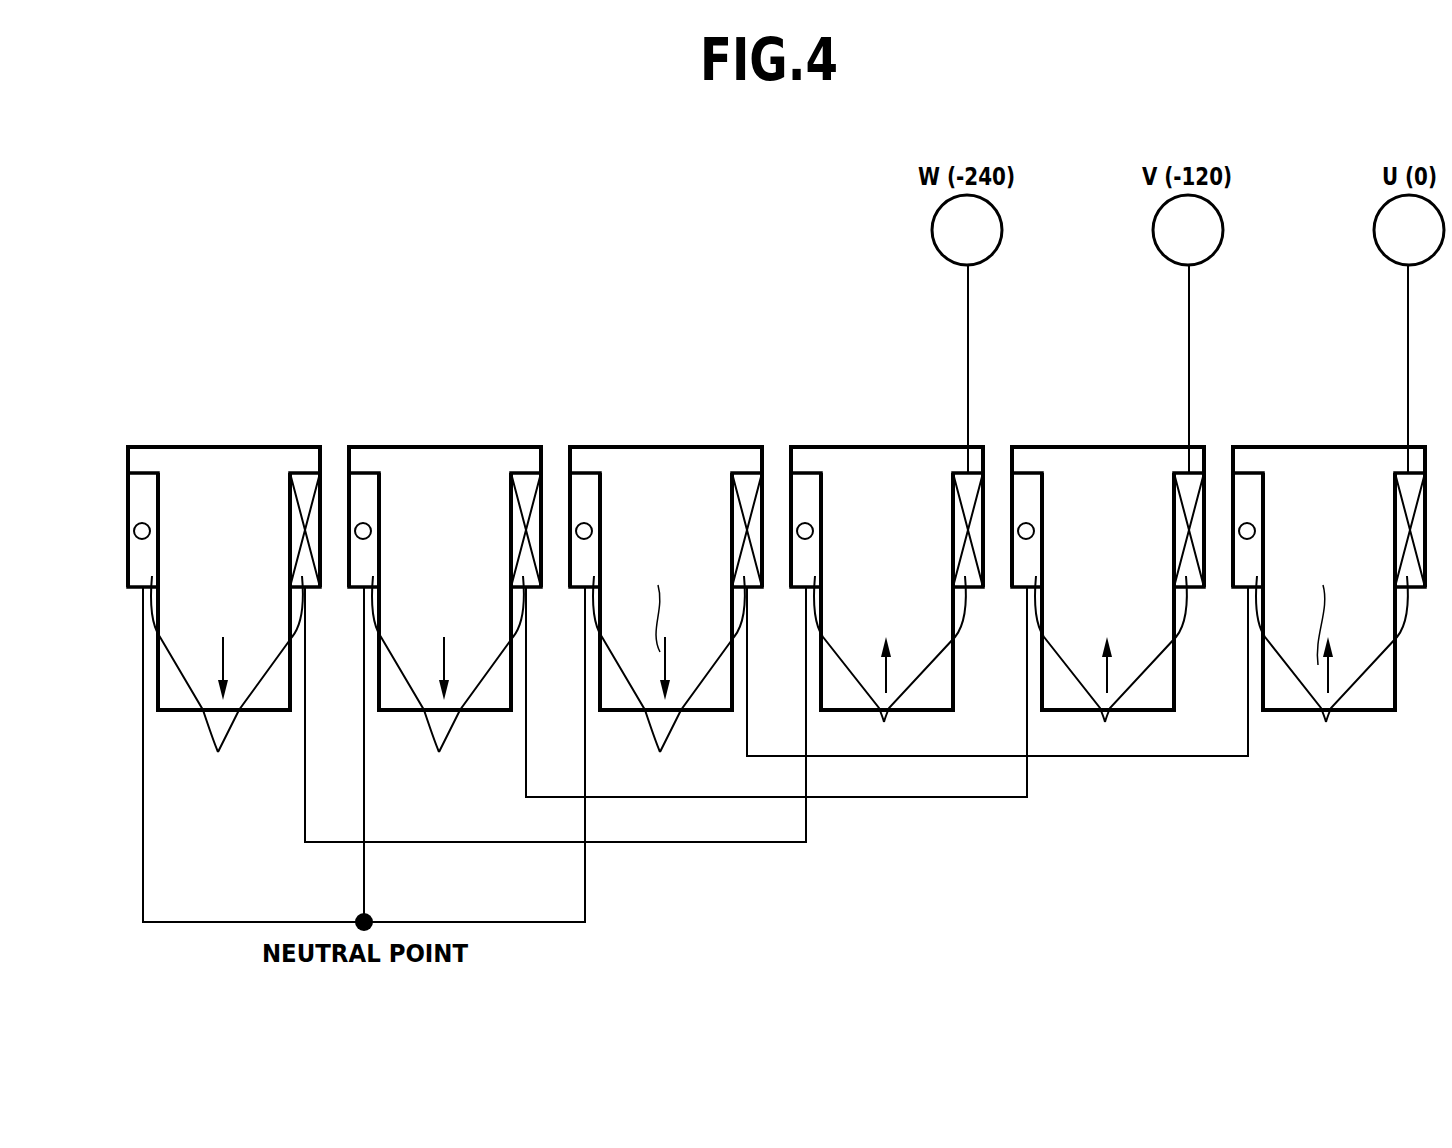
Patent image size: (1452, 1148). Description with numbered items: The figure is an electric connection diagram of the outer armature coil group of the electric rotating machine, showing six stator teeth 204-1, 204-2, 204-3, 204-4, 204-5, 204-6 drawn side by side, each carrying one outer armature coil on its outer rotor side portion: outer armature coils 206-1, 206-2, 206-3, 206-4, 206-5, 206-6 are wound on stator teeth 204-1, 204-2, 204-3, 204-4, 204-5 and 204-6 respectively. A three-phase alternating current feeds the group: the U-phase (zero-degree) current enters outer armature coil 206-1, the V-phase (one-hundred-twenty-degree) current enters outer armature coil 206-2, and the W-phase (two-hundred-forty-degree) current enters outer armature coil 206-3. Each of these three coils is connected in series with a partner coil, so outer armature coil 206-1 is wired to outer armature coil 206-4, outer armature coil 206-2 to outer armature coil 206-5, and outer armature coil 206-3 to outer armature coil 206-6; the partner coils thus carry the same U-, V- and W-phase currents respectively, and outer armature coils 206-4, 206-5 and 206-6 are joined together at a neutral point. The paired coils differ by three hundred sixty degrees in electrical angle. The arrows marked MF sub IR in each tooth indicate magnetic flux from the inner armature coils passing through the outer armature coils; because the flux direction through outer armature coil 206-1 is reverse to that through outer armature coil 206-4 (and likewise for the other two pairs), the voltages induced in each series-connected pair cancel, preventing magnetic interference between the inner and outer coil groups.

The stator tooth 204-1 is at (1330, 470).
The stator tooth 204-2 is at (1109, 470).
The stator tooth 204-3 is at (888, 470).
The stator tooth 204-4 is at (667, 470).
The stator tooth 204-5 is at (446, 470).
The stator tooth 204-6 is at (225, 470).
The outer armature coil 206-1 is at (1332, 655).
The outer armature coil 206-2 is at (1111, 665).
The outer armature coil 206-3 is at (890, 665).
The outer armature coil 206-4 is at (669, 673).
The outer armature coil 206-5 is at (448, 683).
The outer armature coil 206-6 is at (227, 683).